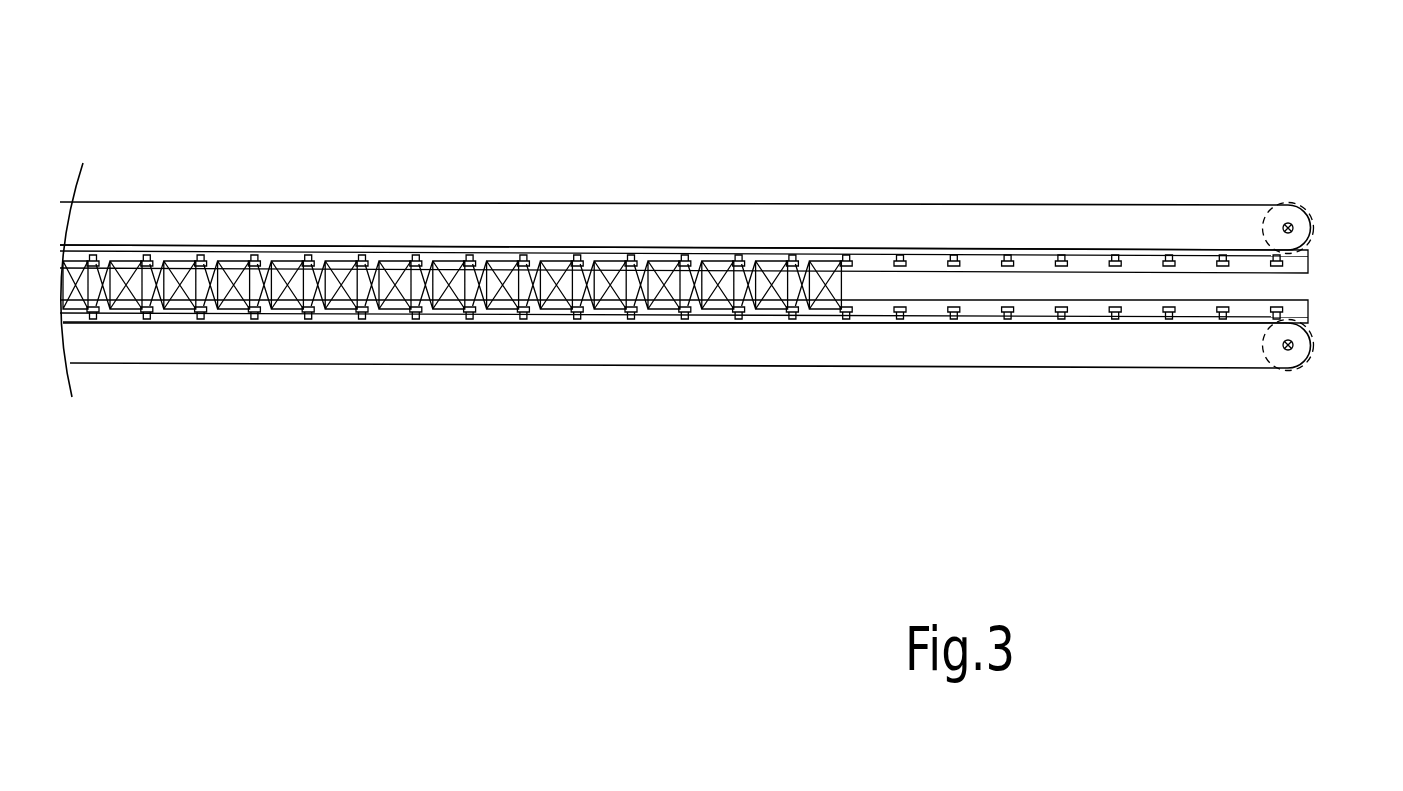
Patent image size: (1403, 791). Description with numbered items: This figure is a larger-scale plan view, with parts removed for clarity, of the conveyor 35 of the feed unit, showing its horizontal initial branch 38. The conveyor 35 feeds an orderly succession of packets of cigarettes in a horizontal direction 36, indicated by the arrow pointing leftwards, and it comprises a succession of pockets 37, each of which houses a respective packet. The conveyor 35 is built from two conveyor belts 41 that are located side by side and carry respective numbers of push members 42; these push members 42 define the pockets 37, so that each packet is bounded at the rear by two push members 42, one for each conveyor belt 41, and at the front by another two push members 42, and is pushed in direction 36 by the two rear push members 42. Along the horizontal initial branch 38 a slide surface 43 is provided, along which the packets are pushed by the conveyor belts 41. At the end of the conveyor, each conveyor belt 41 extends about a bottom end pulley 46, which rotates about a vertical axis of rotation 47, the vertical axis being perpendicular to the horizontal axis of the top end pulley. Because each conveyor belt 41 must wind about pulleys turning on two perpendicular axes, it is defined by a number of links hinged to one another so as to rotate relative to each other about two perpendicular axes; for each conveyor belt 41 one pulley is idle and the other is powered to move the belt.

The conveyor 35 is at (545, 447).
The horizontal direction 36 is at (533, 172).
The pockets 37 is at (873, 290).
The horizontal initial branch 38 is at (705, 148).
The conveyor belts 41 is at (913, 203).
The push members 42 is at (1066, 261).
The slide surface 43 is at (1302, 263).
The bottom end pulley 46 is at (1278, 210).
The vertical axis of rotation 47 is at (1293, 228).